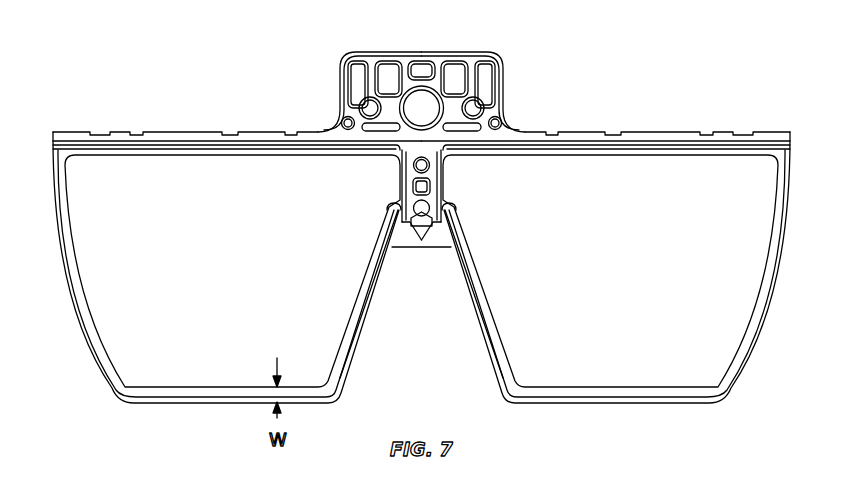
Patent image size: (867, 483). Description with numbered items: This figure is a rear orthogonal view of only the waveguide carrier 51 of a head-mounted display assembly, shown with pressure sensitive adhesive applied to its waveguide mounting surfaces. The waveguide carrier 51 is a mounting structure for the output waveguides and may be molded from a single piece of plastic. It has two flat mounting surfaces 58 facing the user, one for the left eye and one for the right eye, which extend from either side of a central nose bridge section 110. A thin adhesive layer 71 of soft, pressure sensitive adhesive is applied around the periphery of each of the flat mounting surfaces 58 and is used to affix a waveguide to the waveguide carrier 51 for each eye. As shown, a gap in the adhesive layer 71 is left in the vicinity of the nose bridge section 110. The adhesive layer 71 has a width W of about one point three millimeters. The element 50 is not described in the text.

The bridge hump / brow bar attachment 50 is at (453, 52).
The waveguide carrier 51 is at (745, 56).
The flat mounting surface 58 is at (96, 362).
The adhesive layer 71 is at (86, 299).
The nose bridge section 110 is at (421, 247).